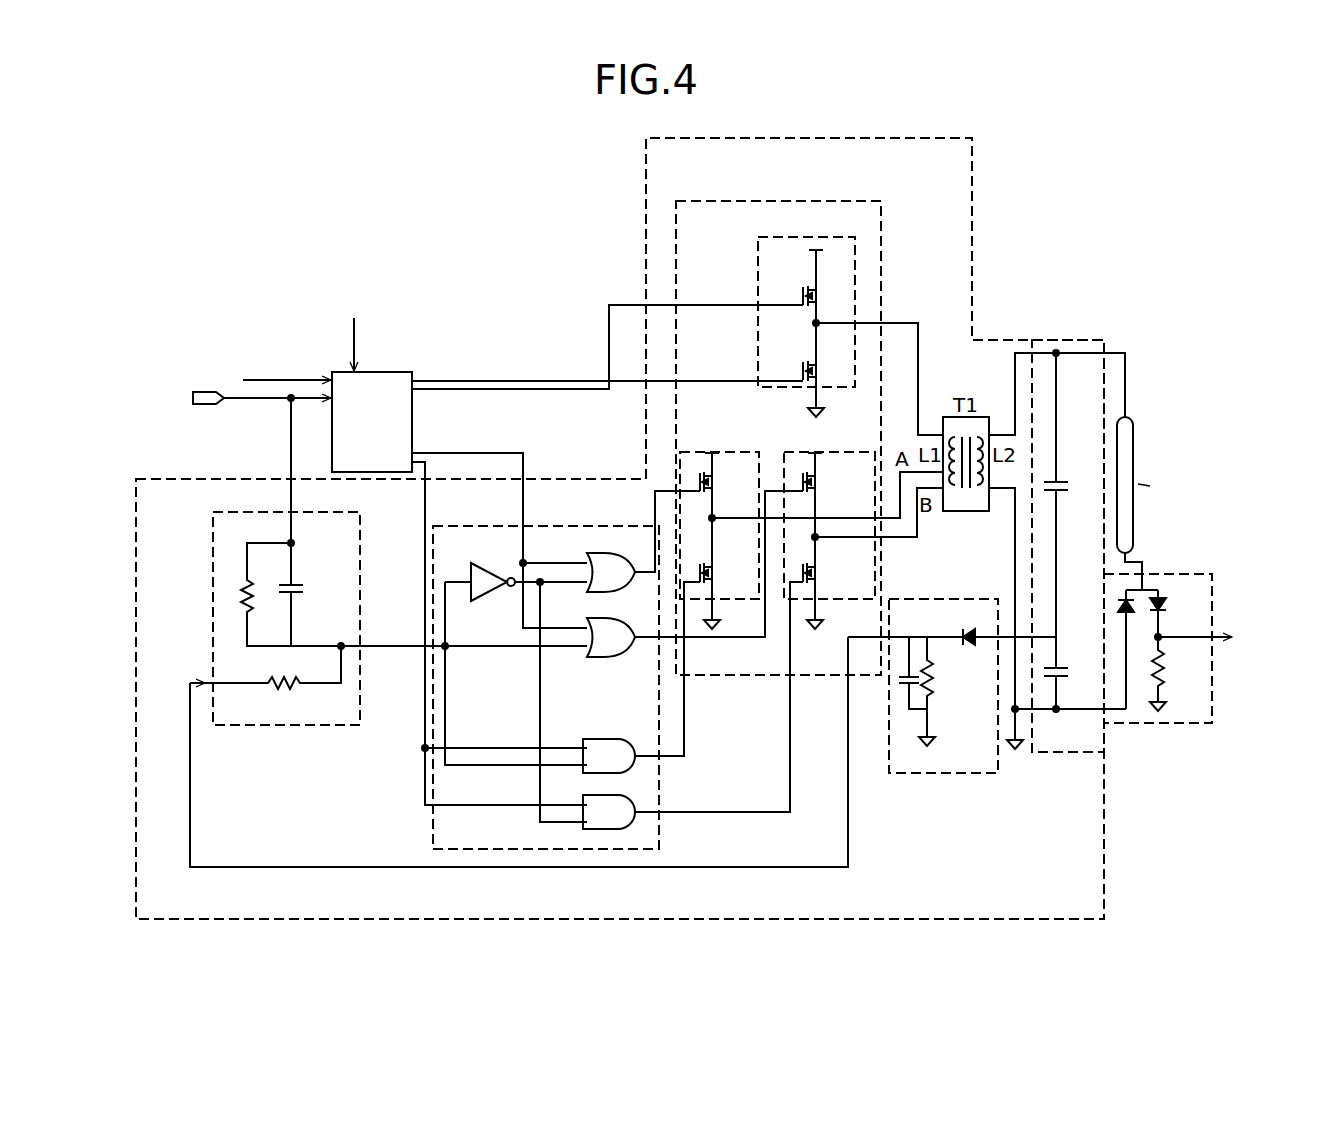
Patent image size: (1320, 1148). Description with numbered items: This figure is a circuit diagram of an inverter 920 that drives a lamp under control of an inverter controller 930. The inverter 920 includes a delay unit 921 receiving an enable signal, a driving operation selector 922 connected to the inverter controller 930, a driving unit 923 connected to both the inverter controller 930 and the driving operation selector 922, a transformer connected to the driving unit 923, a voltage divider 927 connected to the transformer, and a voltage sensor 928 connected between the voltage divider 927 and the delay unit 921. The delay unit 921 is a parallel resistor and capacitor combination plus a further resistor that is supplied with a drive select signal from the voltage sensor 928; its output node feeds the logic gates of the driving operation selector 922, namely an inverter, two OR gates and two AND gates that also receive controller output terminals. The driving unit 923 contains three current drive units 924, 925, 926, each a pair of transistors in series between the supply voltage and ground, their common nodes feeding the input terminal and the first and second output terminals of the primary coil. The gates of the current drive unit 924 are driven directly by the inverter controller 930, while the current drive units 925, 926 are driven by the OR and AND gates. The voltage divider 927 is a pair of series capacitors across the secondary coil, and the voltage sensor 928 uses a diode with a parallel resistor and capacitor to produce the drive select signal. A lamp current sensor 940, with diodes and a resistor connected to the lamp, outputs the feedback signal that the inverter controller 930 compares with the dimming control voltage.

The inverter 920 is at (940, 138).
The delay unit 921 is at (213, 512).
The driving operation selector 922 is at (452, 526).
The driving unit 923 is at (812, 201).
The current drive unit 924 is at (758, 242).
The current drive unit 925 is at (750, 452).
The current drive unit 926 is at (850, 452).
The voltage divider 927 is at (1088, 340).
The voltage sensor 928 is at (962, 599).
The inverter controller 930 is at (378, 372).
The lamp current sensor 940 is at (1200, 574).